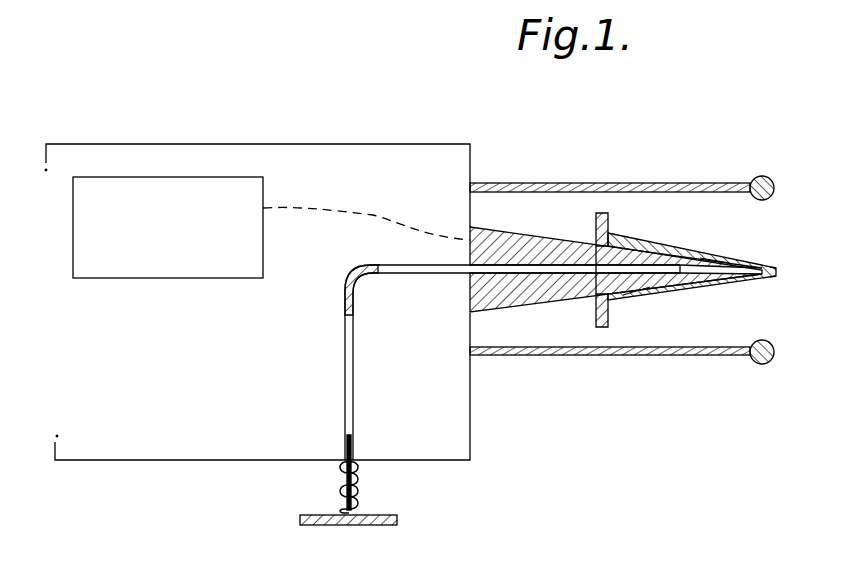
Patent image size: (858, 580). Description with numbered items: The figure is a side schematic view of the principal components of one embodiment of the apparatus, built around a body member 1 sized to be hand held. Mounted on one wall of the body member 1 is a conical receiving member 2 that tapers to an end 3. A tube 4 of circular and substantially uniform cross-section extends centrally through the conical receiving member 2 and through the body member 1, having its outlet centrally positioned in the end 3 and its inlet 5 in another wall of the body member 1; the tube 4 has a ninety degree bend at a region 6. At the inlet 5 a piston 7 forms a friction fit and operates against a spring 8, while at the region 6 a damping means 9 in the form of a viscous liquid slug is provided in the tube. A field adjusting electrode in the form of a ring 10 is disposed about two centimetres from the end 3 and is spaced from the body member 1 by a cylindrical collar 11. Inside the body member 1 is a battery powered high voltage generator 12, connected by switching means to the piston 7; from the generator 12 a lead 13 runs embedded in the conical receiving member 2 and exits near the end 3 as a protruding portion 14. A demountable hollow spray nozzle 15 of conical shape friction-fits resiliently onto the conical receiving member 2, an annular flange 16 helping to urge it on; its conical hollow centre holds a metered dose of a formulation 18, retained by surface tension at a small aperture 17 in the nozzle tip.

The body member 1 is at (144, 440).
The conical receiving member 2 is at (522, 297).
The end 3 is at (638, 295).
The tube 4 is at (566, 265).
The inlet 5 is at (345, 430).
The region 6 is at (353, 262).
The piston 7 is at (323, 525).
The spring 8 is at (353, 488).
The damping means 9 is at (343, 277).
The ring 10 is at (766, 177).
The cylindrical collar 11 is at (513, 186).
The high voltage generator 12 is at (200, 185).
The lead 13 is at (383, 220).
The protruding portion 14 is at (700, 266).
The spray nozzle 15 is at (623, 297).
The annular flange 16 is at (608, 215).
The aperture 17 is at (778, 272).
The formulation 18 is at (773, 268).